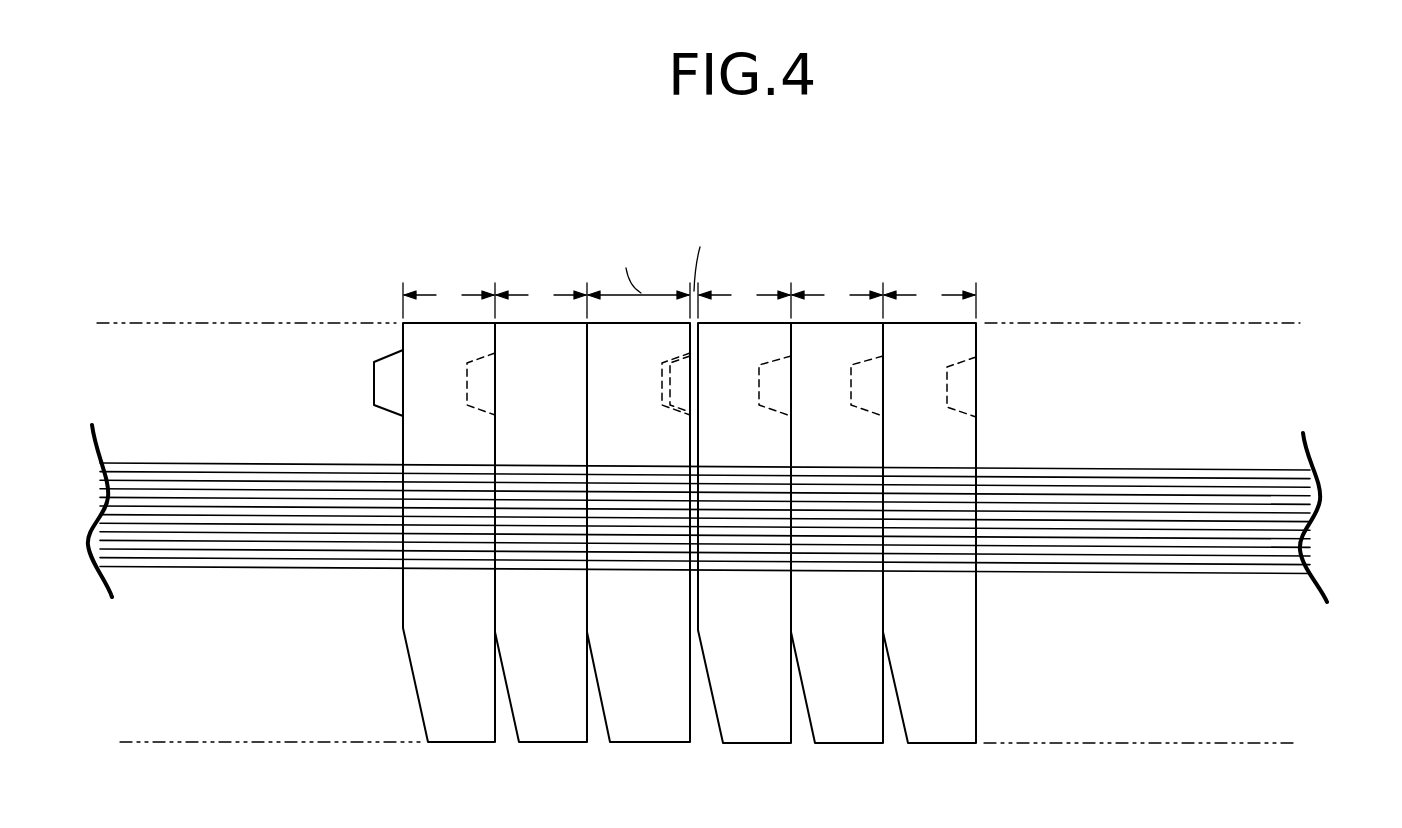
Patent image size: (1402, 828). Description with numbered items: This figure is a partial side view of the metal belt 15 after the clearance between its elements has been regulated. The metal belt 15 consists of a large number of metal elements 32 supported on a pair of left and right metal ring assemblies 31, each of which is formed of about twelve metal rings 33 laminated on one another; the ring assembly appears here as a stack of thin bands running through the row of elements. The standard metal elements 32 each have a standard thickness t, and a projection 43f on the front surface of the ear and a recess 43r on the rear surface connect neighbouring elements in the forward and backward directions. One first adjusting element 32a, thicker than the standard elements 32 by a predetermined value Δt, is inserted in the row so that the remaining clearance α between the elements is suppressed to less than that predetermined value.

The metal belt 15 is at (845, 243).
The metal ring assembly 31 is at (742, 504).
The metal element 32 is at (465, 611).
The first adjusting element 32a is at (613, 611).
The metal ring 33 is at (1303, 498).
The projection 43f is at (390, 383).
The recess 43r is at (955, 411).